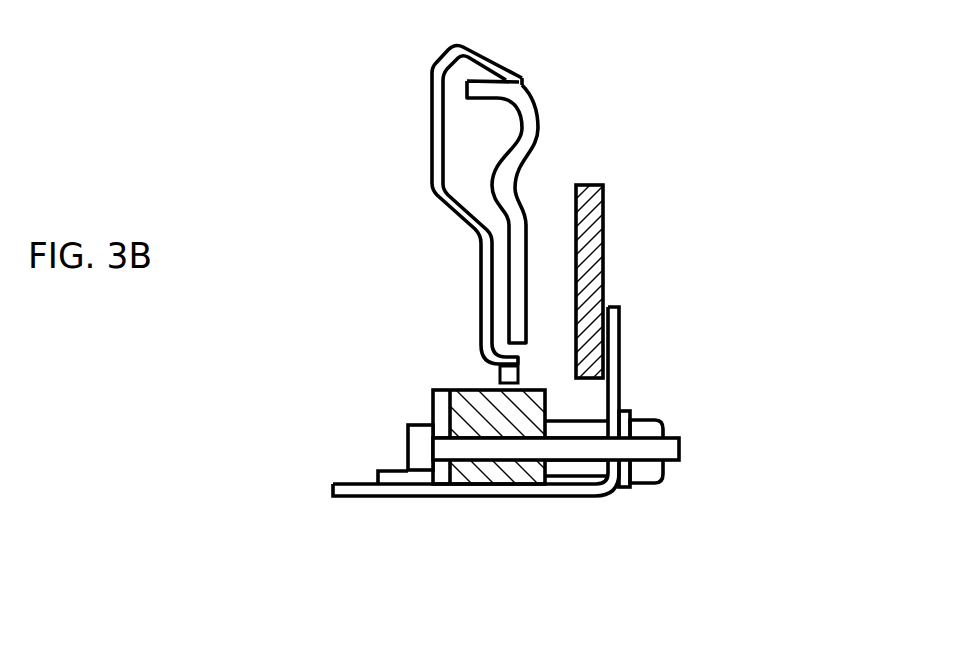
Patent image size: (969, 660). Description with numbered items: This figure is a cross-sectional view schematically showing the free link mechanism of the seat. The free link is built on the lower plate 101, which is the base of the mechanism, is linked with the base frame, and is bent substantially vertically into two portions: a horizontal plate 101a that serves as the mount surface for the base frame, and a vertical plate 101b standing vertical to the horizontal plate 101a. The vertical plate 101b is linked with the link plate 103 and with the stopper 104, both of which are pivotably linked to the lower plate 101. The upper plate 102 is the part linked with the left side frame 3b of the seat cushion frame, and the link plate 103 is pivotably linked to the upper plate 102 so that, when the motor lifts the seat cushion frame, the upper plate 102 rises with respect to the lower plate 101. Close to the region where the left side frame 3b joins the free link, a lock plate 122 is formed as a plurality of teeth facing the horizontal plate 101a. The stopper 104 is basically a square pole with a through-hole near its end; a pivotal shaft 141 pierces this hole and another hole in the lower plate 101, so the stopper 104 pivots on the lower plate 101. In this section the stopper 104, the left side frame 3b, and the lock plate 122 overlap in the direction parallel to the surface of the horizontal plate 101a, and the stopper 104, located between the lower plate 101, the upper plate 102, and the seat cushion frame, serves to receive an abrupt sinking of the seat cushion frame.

The left side frame 3b is at (481, 282).
The upper plate 102 is at (540, 121).
The link plate 103 is at (591, 185).
The lock plate 122 is at (500, 375).
The lower plate 101 is at (555, 456).
The horizontal plate 101a is at (410, 490).
The vertical plate 101b is at (612, 375).
The stopper 104 is at (478, 474).
The pivotal shaft 141 is at (665, 453).